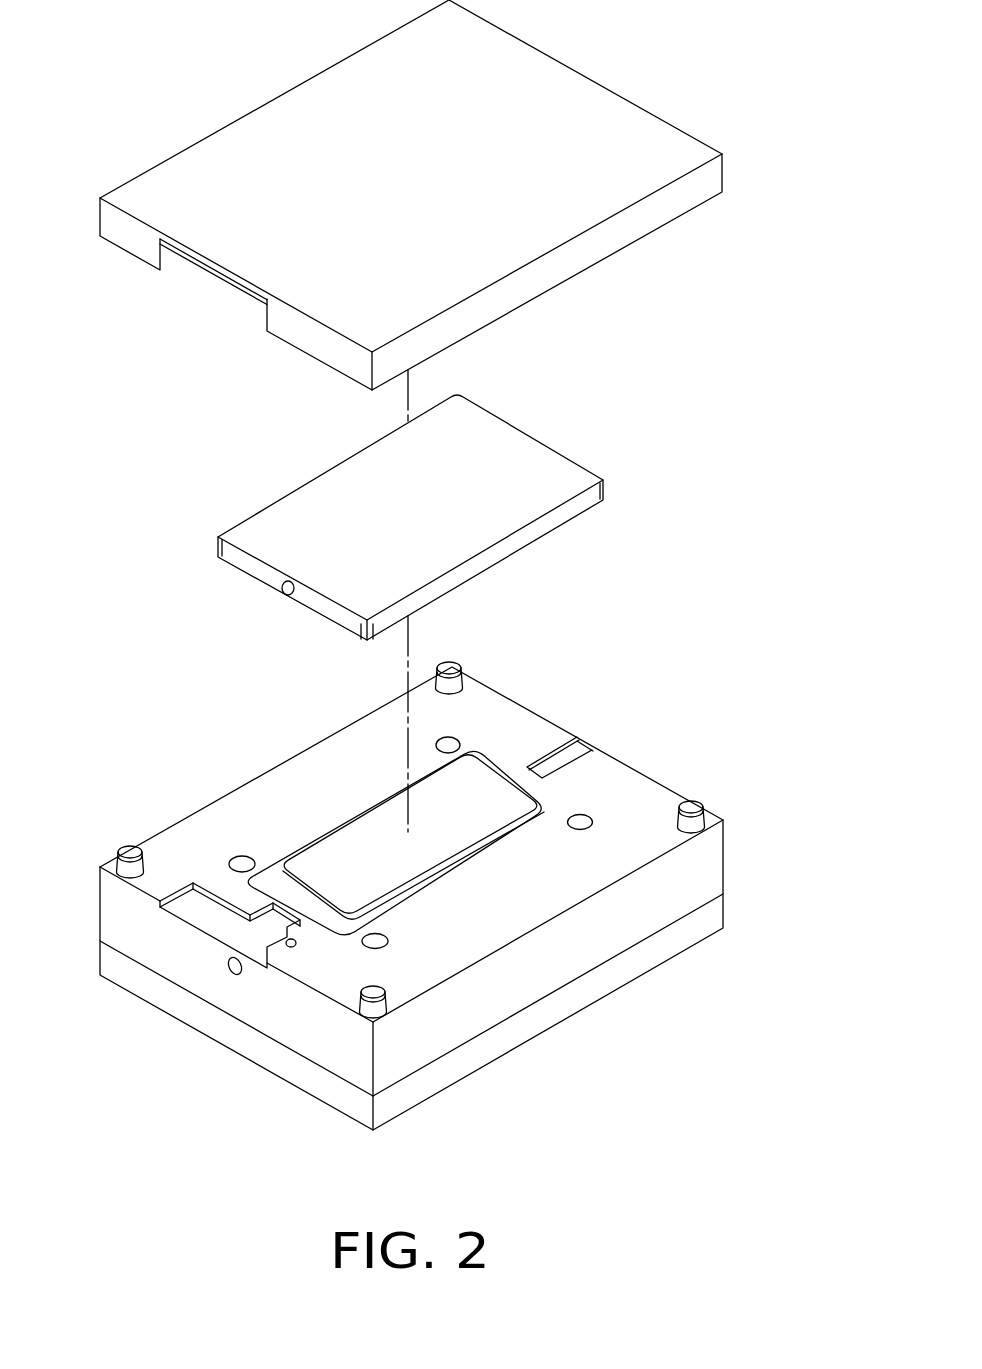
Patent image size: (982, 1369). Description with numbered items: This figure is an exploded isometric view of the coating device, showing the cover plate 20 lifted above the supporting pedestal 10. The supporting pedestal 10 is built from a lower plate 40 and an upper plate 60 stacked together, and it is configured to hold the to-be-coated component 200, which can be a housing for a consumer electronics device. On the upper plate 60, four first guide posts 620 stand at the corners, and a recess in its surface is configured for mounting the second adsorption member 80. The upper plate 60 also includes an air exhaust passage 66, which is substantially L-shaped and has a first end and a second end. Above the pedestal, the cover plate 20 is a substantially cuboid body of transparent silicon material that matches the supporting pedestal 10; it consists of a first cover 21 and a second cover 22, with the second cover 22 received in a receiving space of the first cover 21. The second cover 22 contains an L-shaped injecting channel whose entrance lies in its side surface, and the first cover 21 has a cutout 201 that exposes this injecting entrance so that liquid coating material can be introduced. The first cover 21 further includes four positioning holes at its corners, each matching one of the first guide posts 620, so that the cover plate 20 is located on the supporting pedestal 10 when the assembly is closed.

The supporting pedestal 10 is at (440, 896).
The cover plate 20 is at (410, 320).
The first cover 21 is at (409, 195).
The second cover 22 is at (440, 517).
The cutout 201 is at (207, 270).
The component 200 is at (348, 842).
The upper plate 60 is at (440, 879).
The first guide posts 620 is at (693, 807).
The lower plate 40 is at (693, 933).
The second adsorption member 80 is at (454, 828).
The air exhaust passage 66 is at (233, 975).